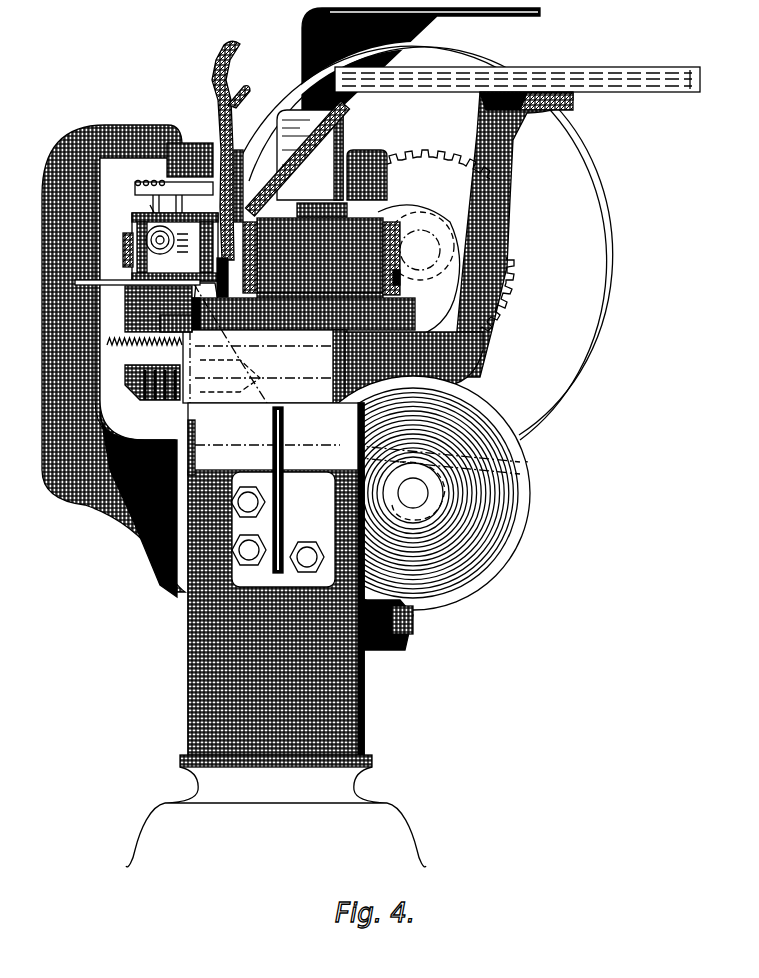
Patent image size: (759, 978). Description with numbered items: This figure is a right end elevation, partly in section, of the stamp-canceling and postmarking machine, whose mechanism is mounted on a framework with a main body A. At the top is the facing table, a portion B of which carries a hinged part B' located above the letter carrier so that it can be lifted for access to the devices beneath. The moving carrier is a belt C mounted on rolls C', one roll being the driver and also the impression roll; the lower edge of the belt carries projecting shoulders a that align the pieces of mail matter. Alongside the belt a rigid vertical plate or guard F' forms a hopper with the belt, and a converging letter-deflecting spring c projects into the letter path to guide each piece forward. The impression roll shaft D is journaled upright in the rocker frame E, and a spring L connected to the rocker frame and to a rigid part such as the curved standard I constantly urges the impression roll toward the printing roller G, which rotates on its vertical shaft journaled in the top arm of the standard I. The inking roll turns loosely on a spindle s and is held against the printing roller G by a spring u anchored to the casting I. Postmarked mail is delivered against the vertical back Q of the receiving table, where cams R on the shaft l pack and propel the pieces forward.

The main body A is at (276, 635).
The facing table B is at (517, 88).
The hinged part of facing table B' is at (489, 233).
The belt C is at (259, 257).
The belt rolls C' is at (320, 258).
The impression roll shaft D is at (312, 163).
The rocker frame E is at (302, 314).
The vertical plate or guard F' is at (222, 169).
The printing roller G is at (165, 231).
The pawl plates G'' is at (152, 374).
The curved standard I is at (42, 274).
The spring L is at (144, 350).
The vertical back of table Q is at (411, 59).
The cams R is at (614, 272).
The shoulders a is at (408, 289).
The letter-deflecting spring c is at (419, 272).
The cam shaft l is at (420, 250).
The spindle s is at (414, 492).
The spring u is at (150, 309).
The shaft w is at (137, 275).